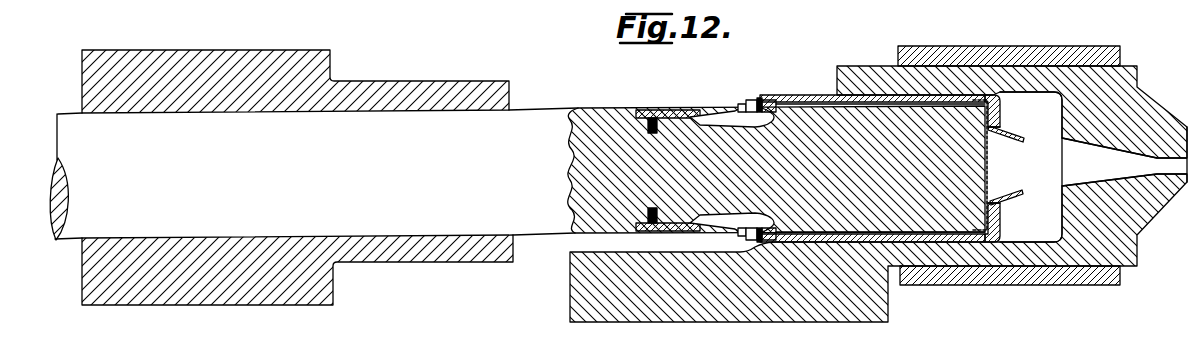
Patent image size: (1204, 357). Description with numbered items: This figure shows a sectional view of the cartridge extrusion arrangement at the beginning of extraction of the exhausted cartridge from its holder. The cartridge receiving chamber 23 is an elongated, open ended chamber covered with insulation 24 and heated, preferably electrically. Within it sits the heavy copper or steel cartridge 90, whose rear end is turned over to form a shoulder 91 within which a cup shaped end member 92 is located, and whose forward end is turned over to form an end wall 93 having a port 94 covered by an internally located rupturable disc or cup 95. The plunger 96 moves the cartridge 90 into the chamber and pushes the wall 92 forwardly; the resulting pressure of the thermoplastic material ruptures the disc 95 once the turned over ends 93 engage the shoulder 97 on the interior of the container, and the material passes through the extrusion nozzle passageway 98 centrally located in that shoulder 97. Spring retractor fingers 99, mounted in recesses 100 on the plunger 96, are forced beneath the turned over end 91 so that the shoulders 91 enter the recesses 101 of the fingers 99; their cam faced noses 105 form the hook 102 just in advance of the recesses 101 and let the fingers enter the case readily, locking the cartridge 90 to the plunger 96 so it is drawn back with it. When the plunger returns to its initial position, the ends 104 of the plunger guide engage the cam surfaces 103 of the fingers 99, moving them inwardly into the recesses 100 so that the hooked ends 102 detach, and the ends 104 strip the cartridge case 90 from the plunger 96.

The cartridge receiving chamber 23 is at (882, 54).
The insulation 24 is at (1031, 40).
The cartridge 90 is at (822, 95).
The shoulder 91 is at (761, 98).
The cup shaped end member 92 is at (988, 183).
The end wall 93 is at (997, 120).
The port 94 is at (1026, 150).
The rupturable disc or cup 95 is at (1020, 141).
The plunger 96 is at (558, 130).
The shoulder 97 is at (1060, 102).
The extrusion nozzle passageway 98 is at (1113, 163).
The spring retractor fingers 99 is at (690, 119).
The recesses 100 is at (698, 119).
The recesses of the fingers 101 is at (750, 100).
The hook 102 is at (776, 100).
The cam surfaces 103 is at (744, 105).
The ends of the guide 104 is at (533, 99).
The cam faced noses 105 is at (800, 95).